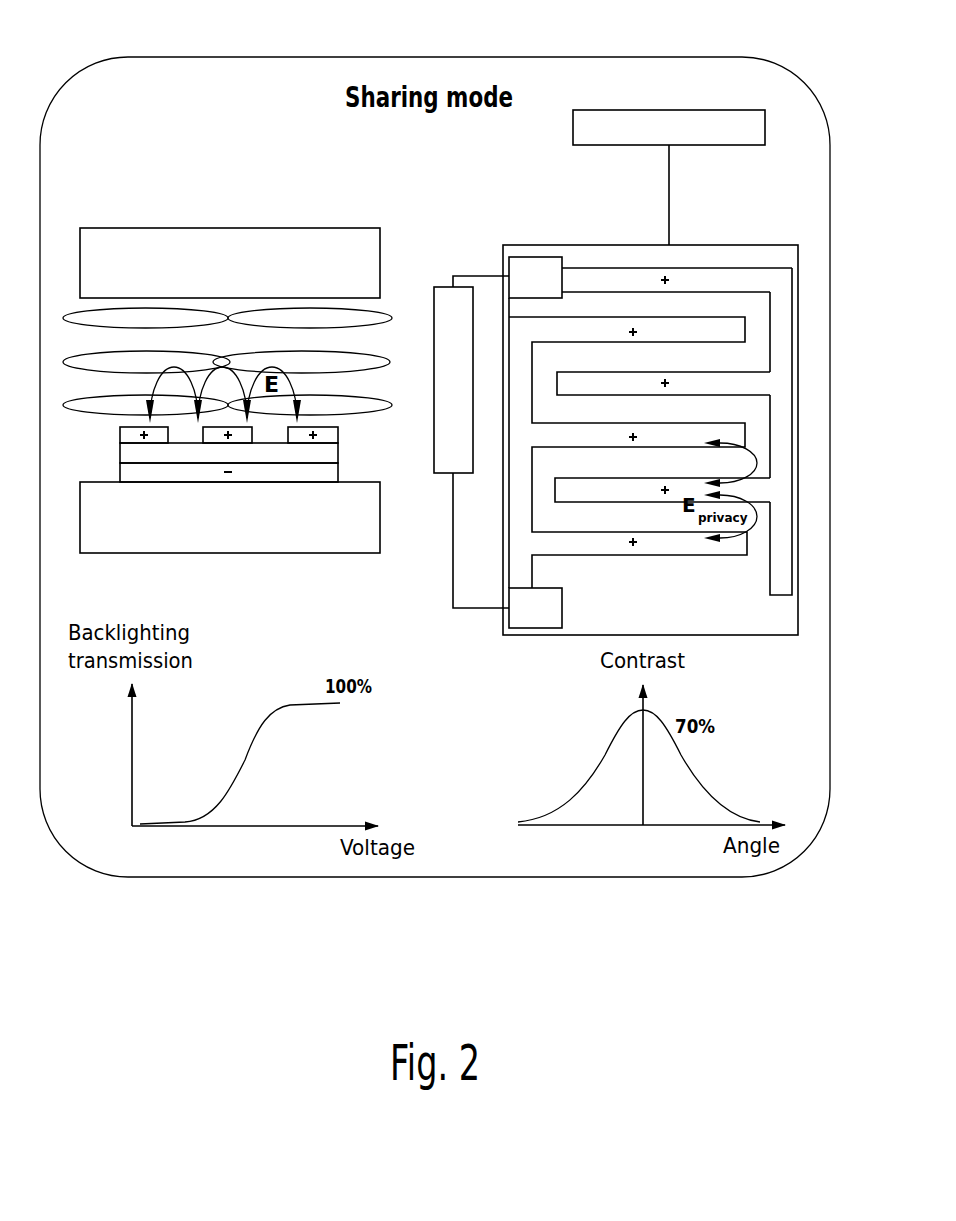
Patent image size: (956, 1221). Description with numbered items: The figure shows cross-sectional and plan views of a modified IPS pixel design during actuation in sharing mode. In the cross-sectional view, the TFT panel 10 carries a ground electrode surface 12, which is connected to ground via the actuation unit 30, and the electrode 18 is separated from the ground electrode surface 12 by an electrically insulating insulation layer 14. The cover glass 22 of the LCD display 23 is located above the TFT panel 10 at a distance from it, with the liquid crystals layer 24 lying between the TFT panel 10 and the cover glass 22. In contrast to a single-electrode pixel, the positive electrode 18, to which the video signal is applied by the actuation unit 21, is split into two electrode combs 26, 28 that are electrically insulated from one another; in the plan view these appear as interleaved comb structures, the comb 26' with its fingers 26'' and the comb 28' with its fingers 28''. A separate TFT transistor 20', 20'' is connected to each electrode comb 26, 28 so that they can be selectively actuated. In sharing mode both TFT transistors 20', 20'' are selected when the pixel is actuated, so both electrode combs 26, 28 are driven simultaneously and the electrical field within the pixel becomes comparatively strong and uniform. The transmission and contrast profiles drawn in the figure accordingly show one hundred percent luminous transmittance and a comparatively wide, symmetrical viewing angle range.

The TFT panel 10 is at (155, 540).
The ground electrode surface 12 is at (130, 470).
The electrically insulating insulation layer 14 is at (128, 453).
The electrode 18 is at (348, 434).
The TFT transistor 20' is at (509, 243).
The TFT transistor 20'' is at (527, 637).
The actuation unit for TFT 21 is at (447, 318).
The cover glass 22 is at (118, 232).
The LCD display 23 is at (387, 348).
The liquid crystals layer 24 is at (92, 318).
The electrode comb 26 is at (427, 544).
The comb electrode 26' is at (655, 373).
The electrode fingers 26'' is at (673, 350).
The electrode comb 28 is at (376, 486).
The comb electrode 28' is at (569, 470).
The electrode fingers 28'' is at (598, 475).
The actuation unit 30 is at (642, 117).